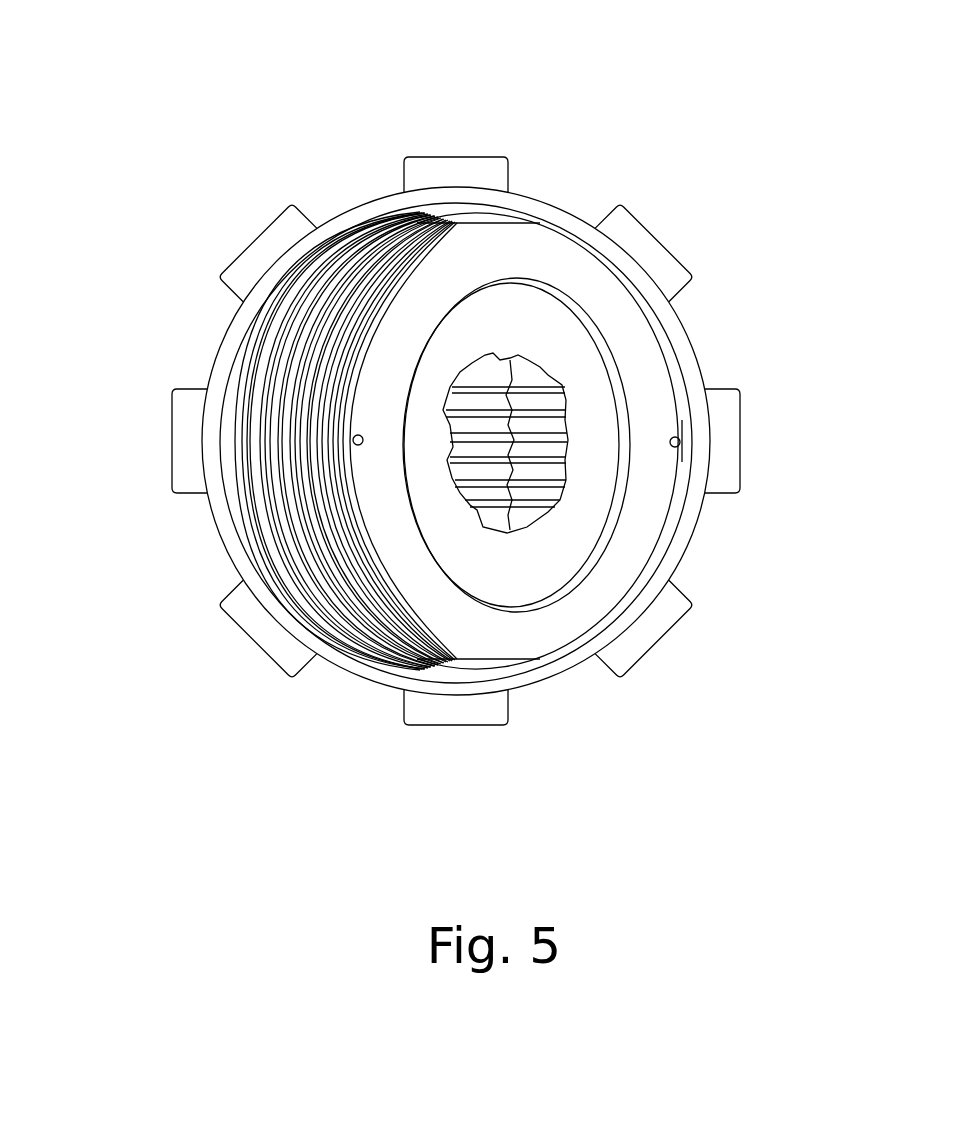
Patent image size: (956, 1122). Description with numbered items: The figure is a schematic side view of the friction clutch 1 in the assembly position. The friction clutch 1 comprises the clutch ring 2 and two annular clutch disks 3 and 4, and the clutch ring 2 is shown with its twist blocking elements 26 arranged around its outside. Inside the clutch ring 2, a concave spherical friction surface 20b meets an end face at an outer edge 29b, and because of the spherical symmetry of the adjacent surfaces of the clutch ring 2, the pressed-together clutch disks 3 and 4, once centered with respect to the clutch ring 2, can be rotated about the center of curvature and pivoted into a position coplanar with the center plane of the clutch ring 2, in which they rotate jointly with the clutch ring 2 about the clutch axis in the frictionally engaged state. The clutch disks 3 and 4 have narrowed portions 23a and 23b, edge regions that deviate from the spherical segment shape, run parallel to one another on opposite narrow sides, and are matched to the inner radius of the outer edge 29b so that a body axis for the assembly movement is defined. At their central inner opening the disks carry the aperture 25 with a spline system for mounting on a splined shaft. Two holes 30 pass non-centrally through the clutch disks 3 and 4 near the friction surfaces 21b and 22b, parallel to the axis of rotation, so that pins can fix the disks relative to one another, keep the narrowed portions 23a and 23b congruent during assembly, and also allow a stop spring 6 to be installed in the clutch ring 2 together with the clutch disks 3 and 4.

The friction clutch 1 is at (243, 90).
The clutch ring 2 is at (565, 197).
The clutch disk 3 is at (655, 497).
The clutch disk 4 is at (250, 377).
The stop spring 6 is at (272, 552).
The friction surface 20b is at (700, 445).
The friction surface 21b is at (315, 376).
The friction surface 22b is at (240, 465).
The narrowed portion 23a is at (482, 660).
The narrowed portion 23b is at (470, 224).
The aperture 25 is at (548, 368).
The twist blocking elements 26 is at (470, 160).
The outer edge 29b is at (637, 287).
The hole 30 is at (671, 437).